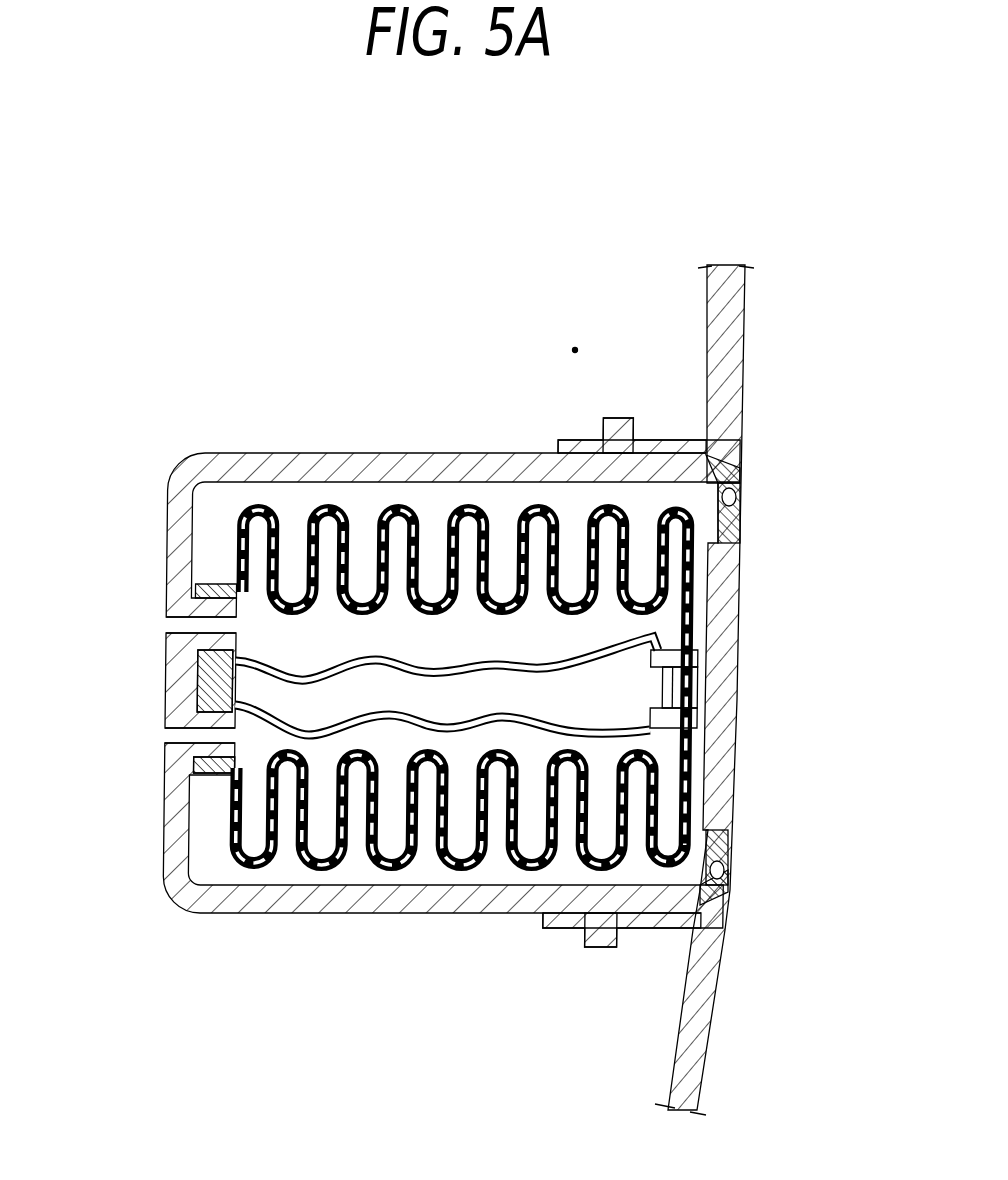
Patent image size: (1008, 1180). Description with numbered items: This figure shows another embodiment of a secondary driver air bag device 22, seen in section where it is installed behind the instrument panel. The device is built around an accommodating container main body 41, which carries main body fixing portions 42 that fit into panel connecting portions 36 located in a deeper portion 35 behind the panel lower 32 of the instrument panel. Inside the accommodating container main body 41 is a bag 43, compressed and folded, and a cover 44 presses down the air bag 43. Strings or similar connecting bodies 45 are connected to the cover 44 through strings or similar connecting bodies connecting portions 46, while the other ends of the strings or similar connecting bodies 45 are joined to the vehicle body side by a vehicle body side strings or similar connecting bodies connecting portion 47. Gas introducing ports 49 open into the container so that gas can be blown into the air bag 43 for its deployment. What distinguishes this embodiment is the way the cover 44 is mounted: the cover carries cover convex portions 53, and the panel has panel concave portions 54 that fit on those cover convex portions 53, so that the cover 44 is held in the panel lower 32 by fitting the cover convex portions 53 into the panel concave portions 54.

The secondary driver air bag device 22 is at (235, 310).
The panel lower 32 is at (745, 350).
The deeper portion 35 is at (576, 348).
The panel connecting portion 36 is at (570, 440).
The accommodating container main body 41 is at (166, 440).
The main body fixing portion 42 is at (625, 420).
The bag 43 is at (398, 500).
The cover 44 is at (740, 700).
The strings or similar connecting bodies 45 is at (465, 725).
The strings or similar connecting bodies connecting portion 46 is at (652, 727).
The vehicle body side strings or similar connecting bodies connecting portion 47 is at (200, 680).
The gas introducing port 49 is at (180, 625).
The cover convex portion 53 is at (745, 505).
The panel concave portion 54 is at (740, 465).